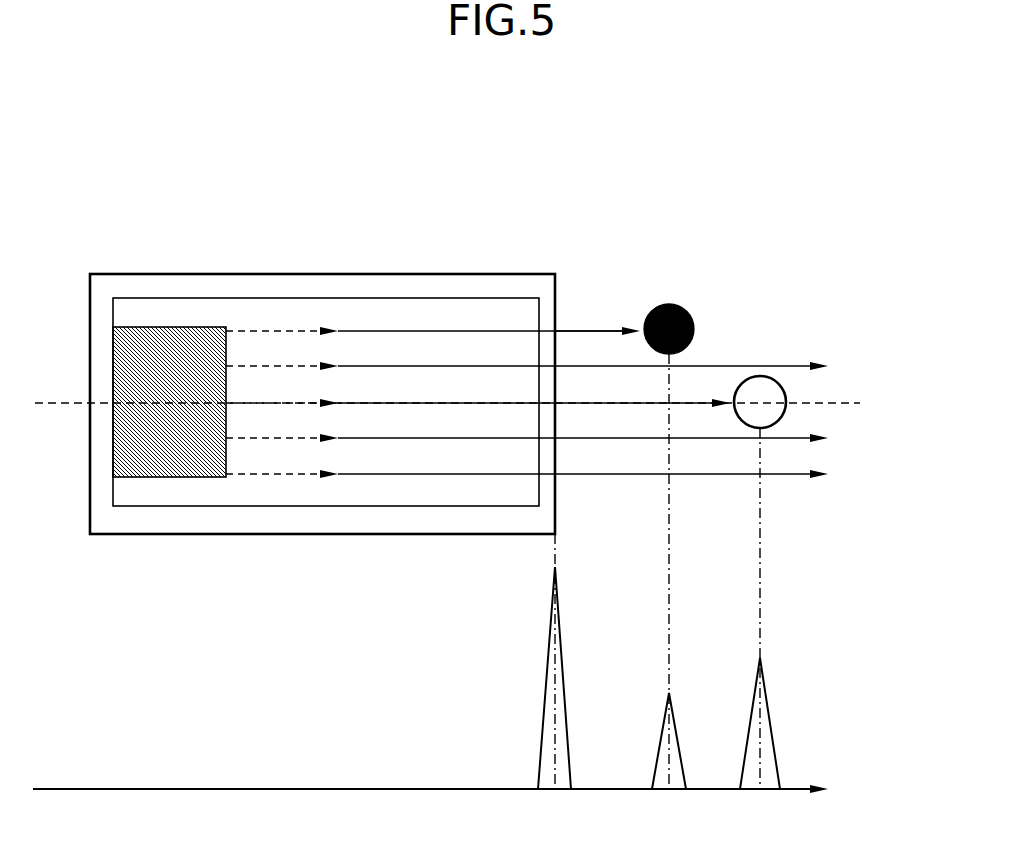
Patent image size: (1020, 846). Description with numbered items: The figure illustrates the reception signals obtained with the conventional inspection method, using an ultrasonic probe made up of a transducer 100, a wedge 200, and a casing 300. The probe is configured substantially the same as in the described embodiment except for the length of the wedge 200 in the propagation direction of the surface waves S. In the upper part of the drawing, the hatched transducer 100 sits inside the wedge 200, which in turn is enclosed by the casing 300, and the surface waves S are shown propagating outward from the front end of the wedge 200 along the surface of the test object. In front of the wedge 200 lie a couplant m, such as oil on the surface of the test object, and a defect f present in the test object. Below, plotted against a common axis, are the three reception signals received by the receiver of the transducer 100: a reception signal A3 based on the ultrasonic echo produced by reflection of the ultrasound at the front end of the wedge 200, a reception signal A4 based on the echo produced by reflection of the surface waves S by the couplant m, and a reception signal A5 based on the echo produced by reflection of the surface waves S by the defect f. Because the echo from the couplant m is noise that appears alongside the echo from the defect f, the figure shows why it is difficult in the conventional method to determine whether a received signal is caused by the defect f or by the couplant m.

The transducer 100 is at (165, 345).
The wedge 200 is at (245, 298).
The casing 300 is at (322, 274).
The surface waves S is at (595, 327).
The couplant m is at (669, 306).
The defect f is at (781, 383).
The reception signal A3 is at (545, 693).
The reception signal A4 is at (659, 745).
The reception signal A5 is at (752, 710).